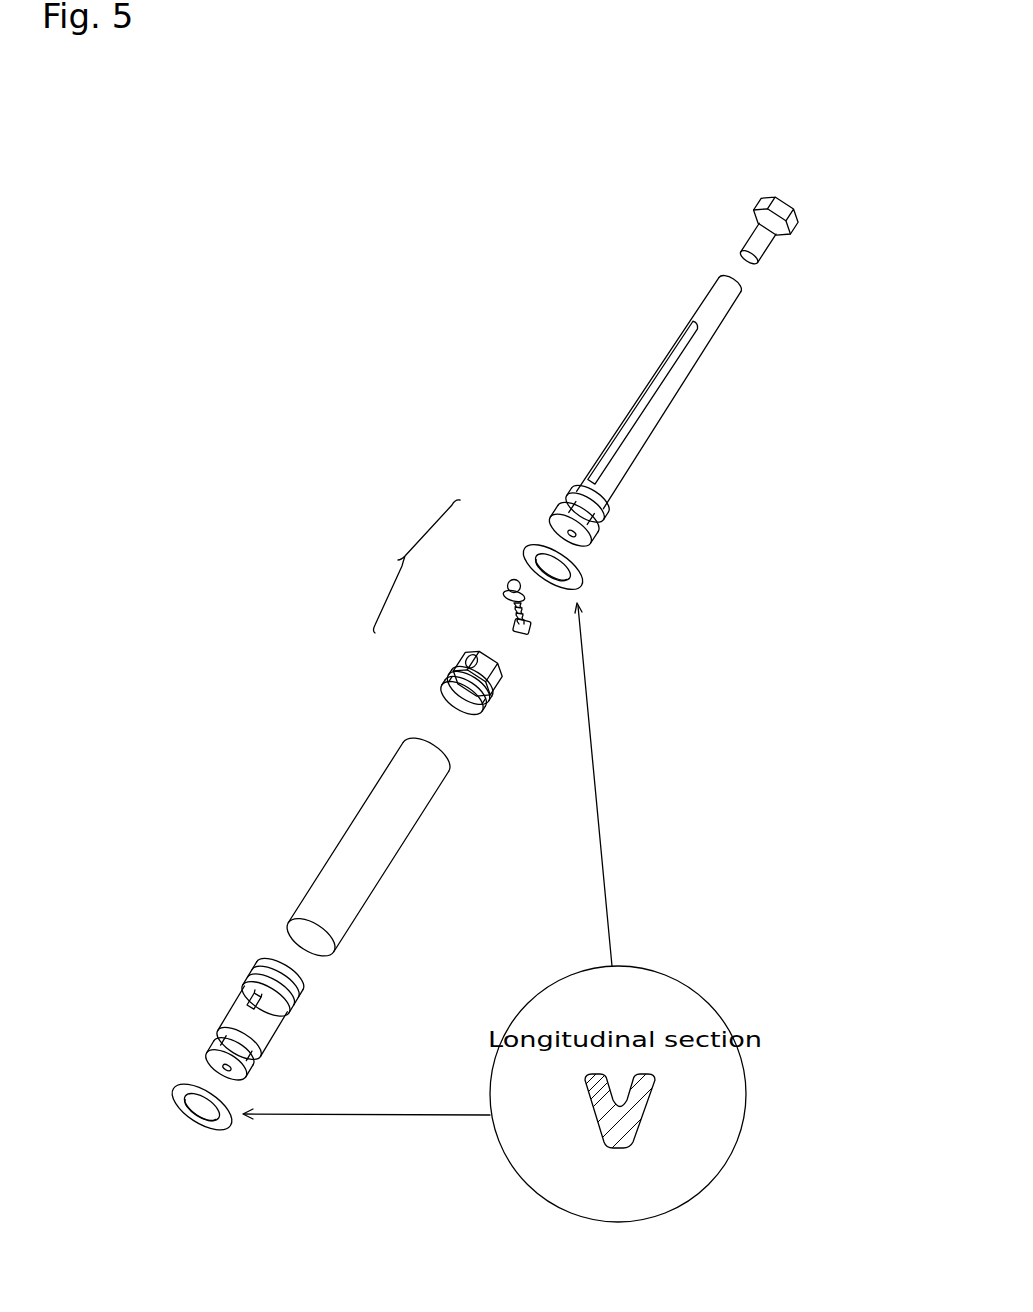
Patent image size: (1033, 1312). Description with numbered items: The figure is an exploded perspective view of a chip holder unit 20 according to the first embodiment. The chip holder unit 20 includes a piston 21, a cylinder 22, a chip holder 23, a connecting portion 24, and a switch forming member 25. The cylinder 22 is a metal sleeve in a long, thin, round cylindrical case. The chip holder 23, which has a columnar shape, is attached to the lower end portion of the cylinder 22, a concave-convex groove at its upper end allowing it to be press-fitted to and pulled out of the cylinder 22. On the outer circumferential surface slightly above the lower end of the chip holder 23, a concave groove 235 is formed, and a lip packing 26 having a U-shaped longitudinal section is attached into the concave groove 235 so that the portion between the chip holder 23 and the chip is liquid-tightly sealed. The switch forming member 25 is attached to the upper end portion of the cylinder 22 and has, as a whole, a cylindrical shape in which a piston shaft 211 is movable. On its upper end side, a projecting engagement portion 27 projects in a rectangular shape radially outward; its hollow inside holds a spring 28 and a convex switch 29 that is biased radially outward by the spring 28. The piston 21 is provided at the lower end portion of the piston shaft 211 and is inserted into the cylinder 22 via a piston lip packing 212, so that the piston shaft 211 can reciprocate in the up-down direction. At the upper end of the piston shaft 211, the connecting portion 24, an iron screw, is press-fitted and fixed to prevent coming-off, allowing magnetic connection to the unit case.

The chip holder unit 20 is at (528, 282).
The piston 21 is at (661, 418).
The piston shaft 211 is at (683, 384).
The piston lip packing 212 is at (577, 579).
The cylinder 22 is at (368, 806).
The chip holder 23 is at (256, 1020).
The concave groove 235 is at (258, 1050).
The connecting portion 24 is at (796, 219).
The switch forming member 25 is at (416, 566).
The lip packing 26 is at (180, 1105).
The projecting engagement portion 27 is at (462, 648).
The spring 28 is at (512, 605).
The switch 29 is at (512, 580).